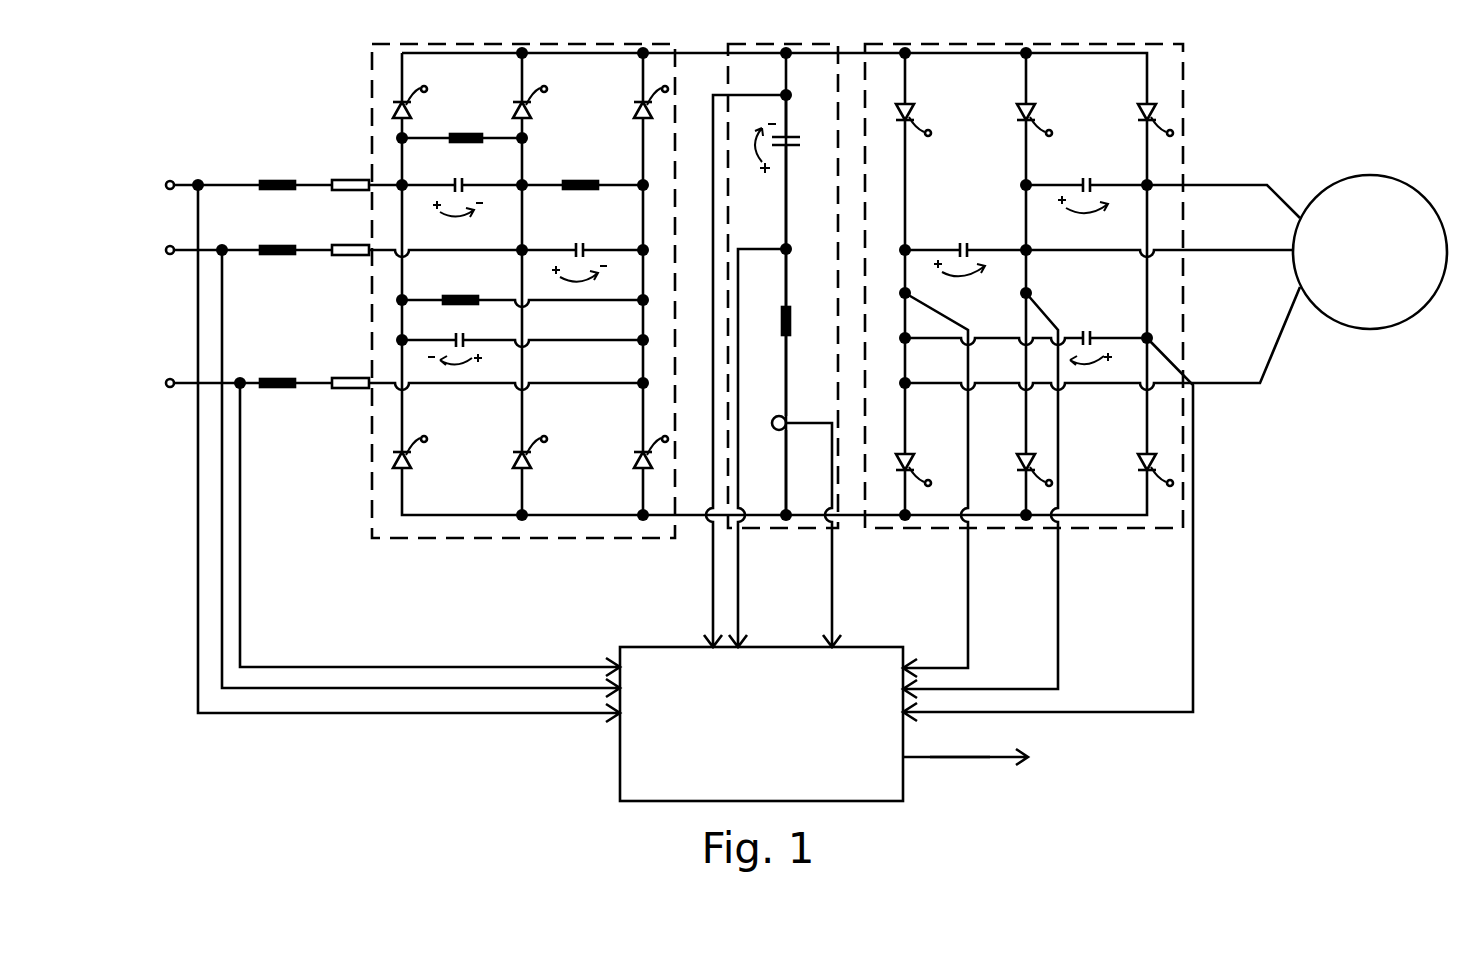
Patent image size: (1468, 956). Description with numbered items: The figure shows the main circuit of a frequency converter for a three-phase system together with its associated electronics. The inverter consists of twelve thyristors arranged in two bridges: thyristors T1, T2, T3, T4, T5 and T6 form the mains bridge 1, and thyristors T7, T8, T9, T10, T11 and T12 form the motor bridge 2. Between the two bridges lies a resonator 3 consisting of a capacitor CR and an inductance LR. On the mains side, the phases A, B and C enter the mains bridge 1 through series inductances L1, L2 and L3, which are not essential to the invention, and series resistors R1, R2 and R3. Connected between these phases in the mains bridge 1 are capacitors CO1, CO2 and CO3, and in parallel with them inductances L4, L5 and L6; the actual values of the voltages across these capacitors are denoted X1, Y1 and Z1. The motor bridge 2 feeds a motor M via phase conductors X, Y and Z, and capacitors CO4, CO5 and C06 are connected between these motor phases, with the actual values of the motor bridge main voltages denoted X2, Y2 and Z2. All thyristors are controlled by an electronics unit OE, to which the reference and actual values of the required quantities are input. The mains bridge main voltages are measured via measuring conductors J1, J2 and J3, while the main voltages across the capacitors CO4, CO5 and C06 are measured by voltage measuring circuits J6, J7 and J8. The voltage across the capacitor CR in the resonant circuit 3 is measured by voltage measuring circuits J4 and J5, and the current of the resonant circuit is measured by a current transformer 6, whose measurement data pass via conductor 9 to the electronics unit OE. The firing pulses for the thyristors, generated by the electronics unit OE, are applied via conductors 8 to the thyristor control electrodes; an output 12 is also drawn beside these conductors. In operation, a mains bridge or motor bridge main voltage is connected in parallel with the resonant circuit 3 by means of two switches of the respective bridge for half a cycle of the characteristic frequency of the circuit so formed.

The mains bridge 1 is at (372, 57).
The motor bridge 2 is at (1187, 118).
The resonator 3 is at (745, 43).
The current transformer 6 is at (784, 417).
The conductors 8 is at (953, 760).
The conductor 9 is at (834, 600).
The output signal 12 is at (956, 777).
The phase A is at (198, 185).
The phase B is at (198, 250).
The phase C is at (198, 383).
The series inductance L1 is at (296, 168).
The series inductance L2 is at (296, 233).
The series inductance L3 is at (296, 366).
The inductance L4 is at (462, 123).
The inductance L5 is at (582, 168).
The inductance L6 is at (522, 286).
The series resistor R1 is at (367, 169).
The series resistor R2 is at (427, 235).
The series resistor R3 is at (487, 367).
The thyristor T1 is at (397, 107).
The thyristor T2 is at (518, 108).
The thyristor T3 is at (638, 108).
The thyristor T4 is at (390, 463).
The thyristor T5 is at (513, 461).
The thyristor T6 is at (634, 462).
The thyristor T7 is at (915, 116).
The thyristor T8 is at (1036, 117).
The thyristor T9 is at (1140, 117).
The thyristor T10 is at (914, 470).
The thyristor T11 is at (1037, 468).
The thyristor T12 is at (1158, 462).
The capacitor CO1 is at (462, 170).
The capacitor CO2 is at (572, 246).
The capacitor CO3 is at (467, 343).
The capacitor CO4 is at (958, 247).
The capacitor CO5 is at (1092, 180).
The capacitor C06 is at (1080, 332).
The capacitor CR is at (793, 147).
The inductance LR is at (790, 324).
The actual value of mains bridge capacitor voltage X1 is at (458, 227).
The actual value of mains bridge capacitor voltage Y1 is at (579, 289).
The actual value of mains bridge capacitor voltage Z1 is at (455, 383).
The actual value of motor bridge main voltage X2 is at (959, 288).
The actual value of motor bridge main voltage Y2 is at (1083, 225).
The actual value of motor bridge main voltage Z2 is at (1088, 375).
The phase conductor X is at (1247, 252).
The phase conductor Y is at (1226, 183).
The phase conductor Z is at (1252, 382).
The motor M is at (1370, 252).
The electronics unit OE is at (761, 724).
The measuring conductor J1 is at (198, 495).
The measuring conductor J2 is at (223, 543).
The measuring conductor J3 is at (239, 601).
The voltage measuring circuit J4 is at (709, 590).
The voltage measuring circuit J5 is at (741, 592).
The voltage measuring circuit J6 is at (971, 627).
The voltage measuring circuit J7 is at (1060, 648).
The voltage measuring circuit J8 is at (1195, 650).